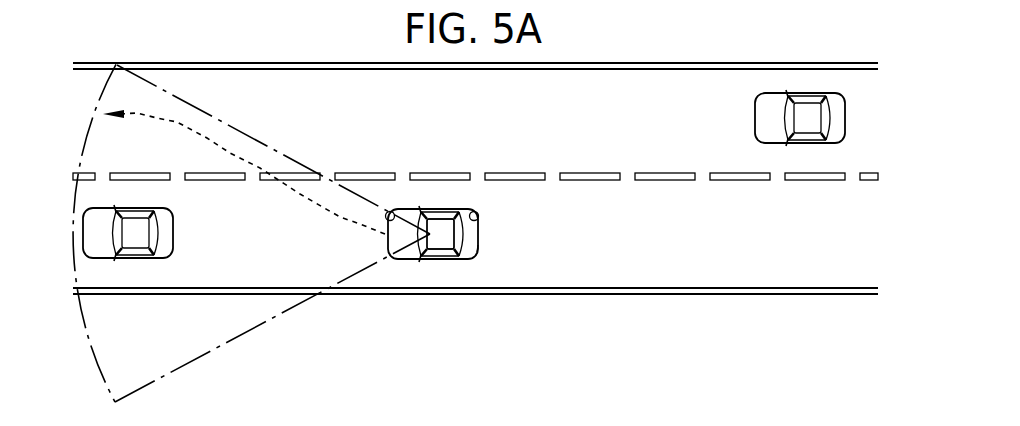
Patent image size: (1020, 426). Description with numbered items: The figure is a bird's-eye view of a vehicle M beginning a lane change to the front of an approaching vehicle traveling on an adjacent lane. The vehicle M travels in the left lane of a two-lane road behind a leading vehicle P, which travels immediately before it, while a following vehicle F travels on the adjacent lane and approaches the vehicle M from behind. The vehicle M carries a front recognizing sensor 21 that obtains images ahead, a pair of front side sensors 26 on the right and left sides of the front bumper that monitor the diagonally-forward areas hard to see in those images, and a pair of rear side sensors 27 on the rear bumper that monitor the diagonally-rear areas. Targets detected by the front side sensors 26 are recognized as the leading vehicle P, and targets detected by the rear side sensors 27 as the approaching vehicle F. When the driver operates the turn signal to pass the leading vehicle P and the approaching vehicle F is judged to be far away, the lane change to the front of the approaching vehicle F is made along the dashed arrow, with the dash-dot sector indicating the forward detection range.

The front recognizing sensor 21 is at (447, 209).
The front side sensor 26 is at (390, 211).
The rear side sensor 27 is at (480, 216).
The vehicle M is at (458, 258).
The leading vehicle P is at (136, 259).
The following vehicle (approaching vehicle) F is at (808, 144).